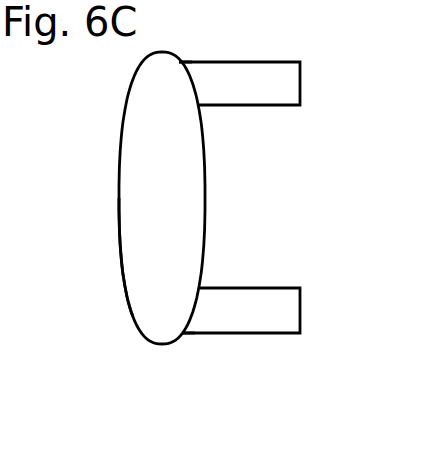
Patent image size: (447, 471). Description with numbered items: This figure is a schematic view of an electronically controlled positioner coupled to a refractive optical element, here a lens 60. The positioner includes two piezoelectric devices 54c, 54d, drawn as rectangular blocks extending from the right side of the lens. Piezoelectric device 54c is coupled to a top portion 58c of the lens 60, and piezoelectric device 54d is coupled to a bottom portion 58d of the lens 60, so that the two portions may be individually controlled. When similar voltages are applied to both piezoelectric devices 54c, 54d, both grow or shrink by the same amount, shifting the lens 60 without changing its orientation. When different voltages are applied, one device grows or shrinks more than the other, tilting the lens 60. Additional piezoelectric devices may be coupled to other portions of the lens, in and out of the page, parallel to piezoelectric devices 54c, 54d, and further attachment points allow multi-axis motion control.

The piezoelectric device 54c is at (217, 95).
The piezoelectric device 54d is at (217, 321).
The top portion 58c is at (181, 52).
The bottom portion 58d is at (186, 349).
The lens 60 is at (174, 224).